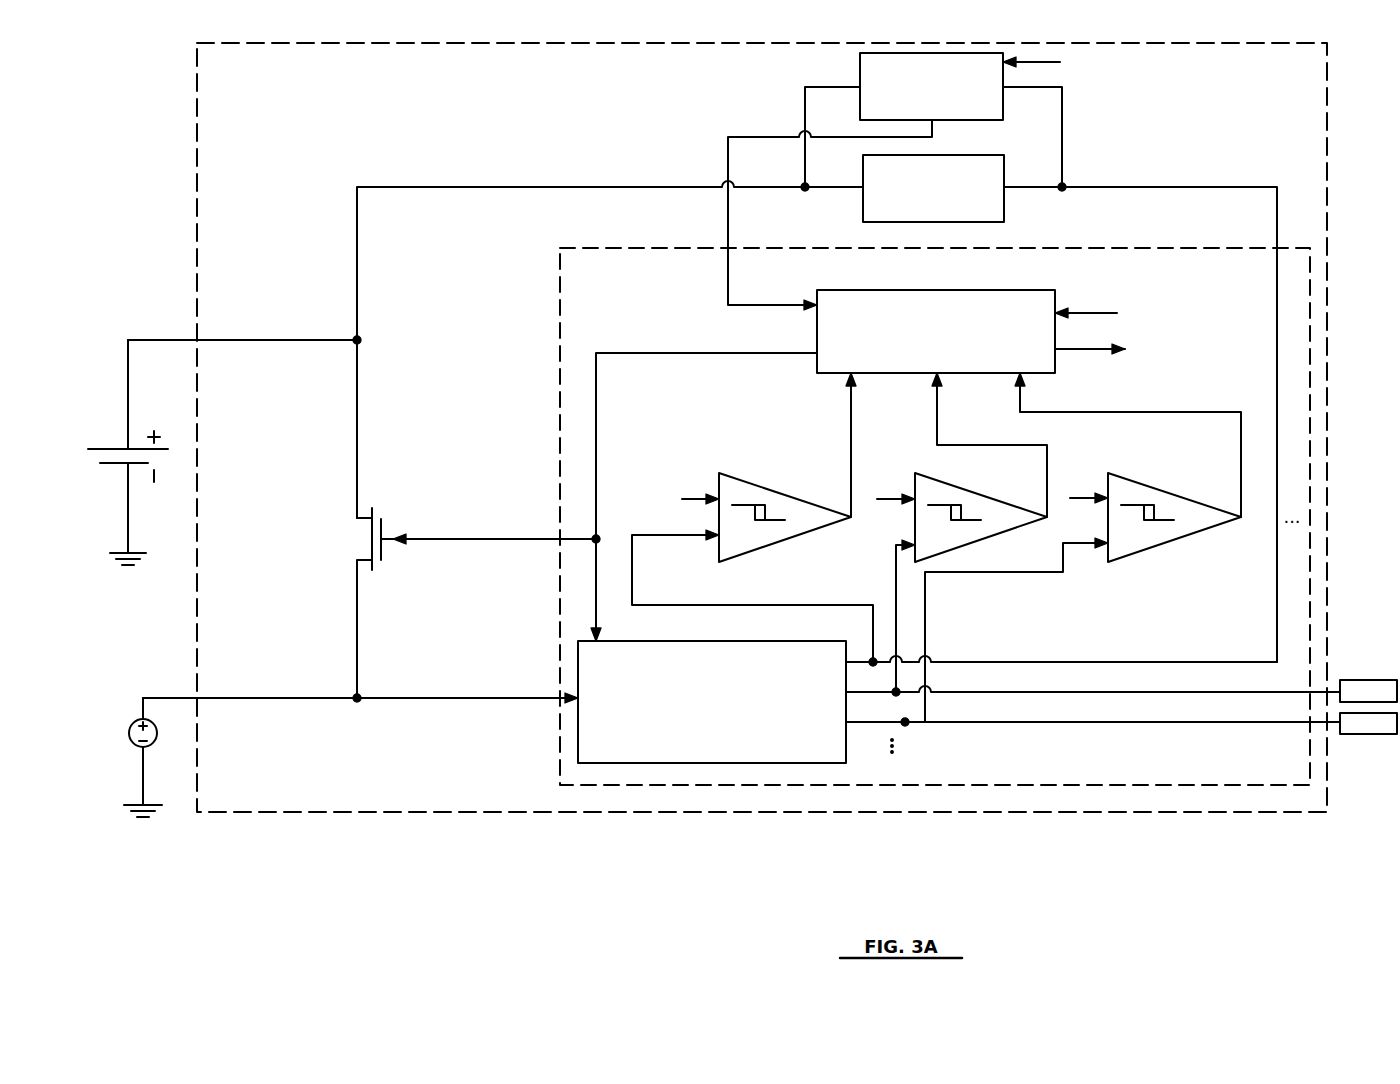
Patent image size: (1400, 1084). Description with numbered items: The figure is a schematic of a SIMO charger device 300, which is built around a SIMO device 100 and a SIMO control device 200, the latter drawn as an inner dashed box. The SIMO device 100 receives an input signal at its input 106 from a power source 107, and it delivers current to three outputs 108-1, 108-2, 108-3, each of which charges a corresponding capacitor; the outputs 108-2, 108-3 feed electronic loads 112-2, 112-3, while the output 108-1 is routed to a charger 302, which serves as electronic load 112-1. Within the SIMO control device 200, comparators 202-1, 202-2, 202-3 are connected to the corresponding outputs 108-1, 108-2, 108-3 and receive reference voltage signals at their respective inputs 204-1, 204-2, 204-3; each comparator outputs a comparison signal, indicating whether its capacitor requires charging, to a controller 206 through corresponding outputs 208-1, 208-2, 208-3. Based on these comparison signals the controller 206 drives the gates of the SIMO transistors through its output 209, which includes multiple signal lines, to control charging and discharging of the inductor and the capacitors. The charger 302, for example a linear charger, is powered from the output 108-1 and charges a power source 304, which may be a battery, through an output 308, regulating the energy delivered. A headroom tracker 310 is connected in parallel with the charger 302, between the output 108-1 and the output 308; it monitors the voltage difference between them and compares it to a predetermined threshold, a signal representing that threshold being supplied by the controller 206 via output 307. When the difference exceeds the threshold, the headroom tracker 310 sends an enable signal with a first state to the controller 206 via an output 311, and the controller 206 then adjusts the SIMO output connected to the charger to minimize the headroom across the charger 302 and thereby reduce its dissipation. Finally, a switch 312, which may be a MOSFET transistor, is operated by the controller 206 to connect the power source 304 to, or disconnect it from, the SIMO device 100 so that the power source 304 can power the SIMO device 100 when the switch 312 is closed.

The SIMO charger device 300 is at (188, 137).
The SIMO control device 200 is at (552, 355).
The power source 304 is at (88, 449).
The output 308 is at (520, 187).
The switch 312 is at (372, 560).
The power source 107 is at (130, 733).
The input 106 is at (313, 698).
The SIMO device 100 is at (566, 718).
The headroom tracker 310 is at (860, 73).
The output 311 is at (728, 137).
The charger 302 is at (971, 180).
The electronic load 112-1 is at (965, 155).
The output 307 is at (1060, 62).
The controller 206 is at (935, 290).
The output 209 is at (640, 353).
The comparator 202-1 is at (747, 482).
The comparator 202-2 is at (940, 483).
The comparator 202-3 is at (1157, 487).
The input 204-1 is at (708, 498).
The input 204-2 is at (877, 499).
The input 204-3 is at (1070, 498).
The output 208-1 is at (851, 430).
The output 208-2 is at (1028, 445).
The output 208-3 is at (1170, 412).
The output 108-1 is at (950, 662).
The output 108-2 is at (950, 692).
The output 108-3 is at (950, 722).
The electronic load 112-2 is at (1343, 680).
The electronic load 112-3 is at (1385, 734).